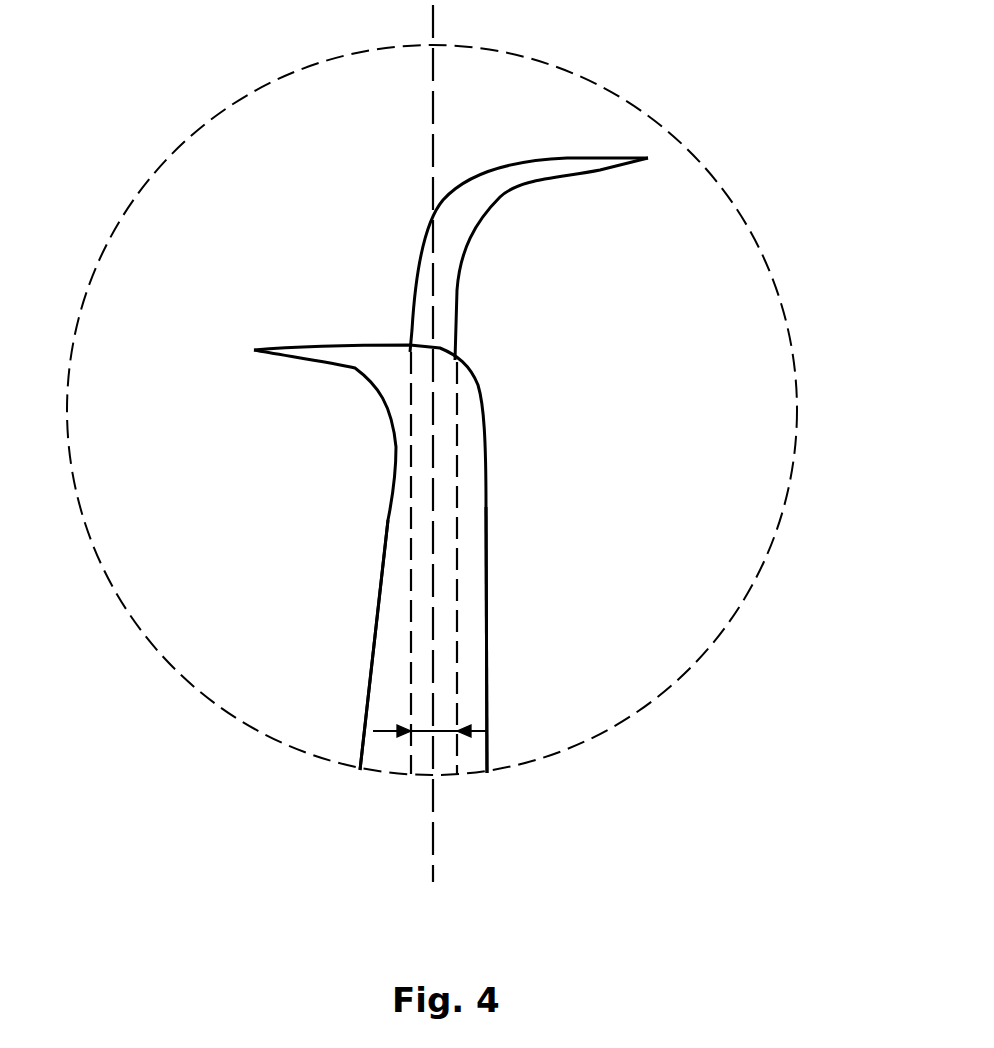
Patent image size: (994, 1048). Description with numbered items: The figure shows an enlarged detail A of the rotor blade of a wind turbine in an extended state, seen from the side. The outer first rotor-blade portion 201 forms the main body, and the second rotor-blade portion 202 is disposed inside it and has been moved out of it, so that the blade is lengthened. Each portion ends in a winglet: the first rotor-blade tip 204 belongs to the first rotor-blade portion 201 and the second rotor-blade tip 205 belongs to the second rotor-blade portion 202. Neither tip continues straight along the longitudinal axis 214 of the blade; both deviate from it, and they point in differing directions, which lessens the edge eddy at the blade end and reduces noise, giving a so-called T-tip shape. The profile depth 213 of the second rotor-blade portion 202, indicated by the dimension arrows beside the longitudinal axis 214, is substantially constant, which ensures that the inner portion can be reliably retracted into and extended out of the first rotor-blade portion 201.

The first rotor-blade portion 201 is at (470, 695).
The second rotor-blade portion 202 is at (447, 503).
The first rotor-blade tip 204 is at (307, 346).
The second rotor-blade tip 205 is at (568, 157).
The profile depth 213 is at (425, 735).
The longitudinal axis 214 is at (433, 158).
The enlarged detail region A is at (697, 136).